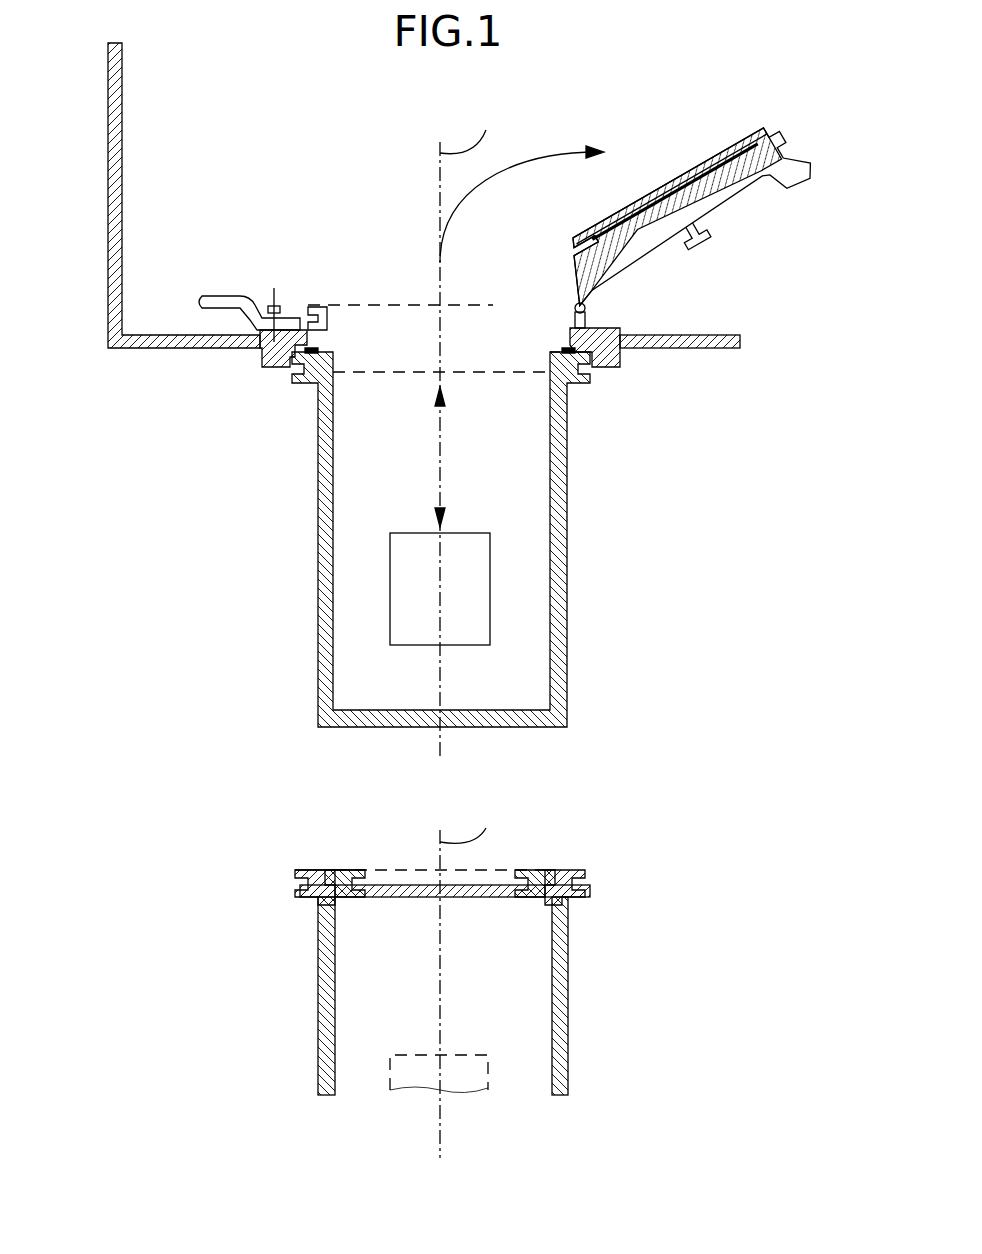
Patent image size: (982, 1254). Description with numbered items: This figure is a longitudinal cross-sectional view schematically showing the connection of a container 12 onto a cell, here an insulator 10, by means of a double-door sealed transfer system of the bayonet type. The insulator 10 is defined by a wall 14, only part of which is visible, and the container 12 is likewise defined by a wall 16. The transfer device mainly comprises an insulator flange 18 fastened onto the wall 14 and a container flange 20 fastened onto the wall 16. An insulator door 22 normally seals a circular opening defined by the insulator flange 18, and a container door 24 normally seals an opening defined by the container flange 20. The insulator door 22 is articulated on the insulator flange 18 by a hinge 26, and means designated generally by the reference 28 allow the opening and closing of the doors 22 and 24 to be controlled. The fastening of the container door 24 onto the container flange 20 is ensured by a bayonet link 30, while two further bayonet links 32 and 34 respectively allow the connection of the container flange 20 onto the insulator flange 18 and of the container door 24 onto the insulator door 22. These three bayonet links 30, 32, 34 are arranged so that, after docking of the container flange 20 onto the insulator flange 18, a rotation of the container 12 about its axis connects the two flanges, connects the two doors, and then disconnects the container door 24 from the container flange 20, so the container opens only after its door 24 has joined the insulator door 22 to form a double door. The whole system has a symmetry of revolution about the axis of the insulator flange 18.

The insulator 10 is at (370, 171).
The container 12 is at (403, 461).
The wall 14 is at (122, 160).
The wall 16 is at (317, 635).
The insulator flange 18 is at (265, 360).
The container flange 20 is at (302, 385).
The insulator door 22 is at (640, 248).
The container door 24 is at (727, 155).
The hinge 26 is at (600, 312).
The means for controlling opening and closing of the doors 28 is at (233, 282).
The bayonet link 30 is at (308, 864).
The bayonet link 32 is at (606, 380).
The bayonet link 34 is at (750, 178).